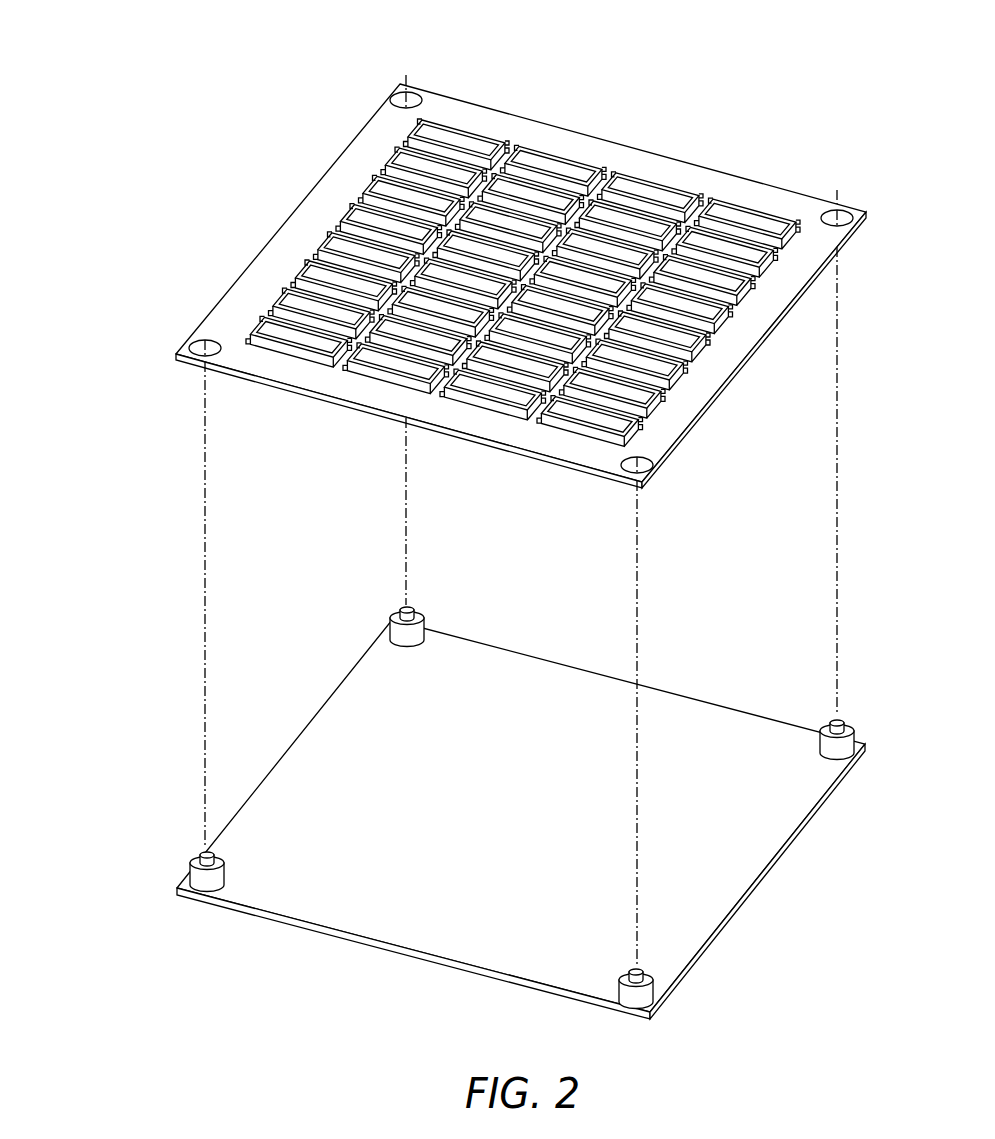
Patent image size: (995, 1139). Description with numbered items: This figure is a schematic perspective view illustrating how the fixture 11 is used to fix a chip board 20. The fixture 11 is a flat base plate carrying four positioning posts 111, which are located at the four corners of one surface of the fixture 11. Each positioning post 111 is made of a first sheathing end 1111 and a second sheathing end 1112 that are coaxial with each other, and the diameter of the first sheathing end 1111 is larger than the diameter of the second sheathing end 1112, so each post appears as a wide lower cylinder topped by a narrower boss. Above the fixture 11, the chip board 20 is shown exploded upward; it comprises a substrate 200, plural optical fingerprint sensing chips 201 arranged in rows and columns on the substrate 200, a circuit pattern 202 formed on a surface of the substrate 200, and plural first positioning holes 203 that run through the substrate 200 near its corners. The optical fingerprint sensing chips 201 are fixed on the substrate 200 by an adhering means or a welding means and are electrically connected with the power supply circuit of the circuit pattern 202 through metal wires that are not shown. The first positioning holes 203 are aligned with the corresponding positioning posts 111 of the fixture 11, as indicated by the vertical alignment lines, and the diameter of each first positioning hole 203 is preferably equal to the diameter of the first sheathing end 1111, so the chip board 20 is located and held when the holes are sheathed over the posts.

The chip board 20 is at (480, 245).
The substrate 200 is at (334, 166).
The optical fingerprint sensing chips 201 is at (297, 273).
The circuit pattern 202 is at (294, 286).
The first positioning holes 203 is at (201, 340).
The fixture 11 is at (370, 922).
The positioning posts 111 is at (127, 862).
The first sheathing end 1111 is at (190, 876).
The second sheathing end 1112 is at (200, 854).